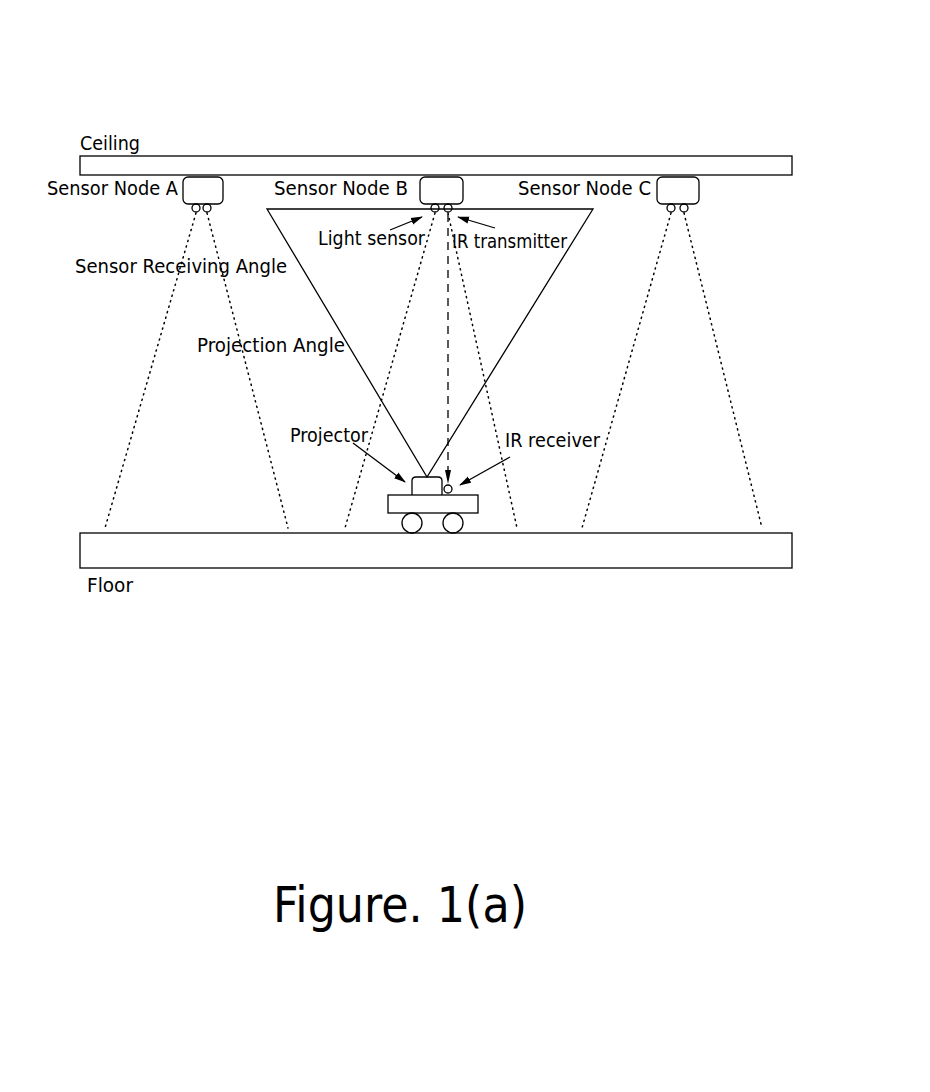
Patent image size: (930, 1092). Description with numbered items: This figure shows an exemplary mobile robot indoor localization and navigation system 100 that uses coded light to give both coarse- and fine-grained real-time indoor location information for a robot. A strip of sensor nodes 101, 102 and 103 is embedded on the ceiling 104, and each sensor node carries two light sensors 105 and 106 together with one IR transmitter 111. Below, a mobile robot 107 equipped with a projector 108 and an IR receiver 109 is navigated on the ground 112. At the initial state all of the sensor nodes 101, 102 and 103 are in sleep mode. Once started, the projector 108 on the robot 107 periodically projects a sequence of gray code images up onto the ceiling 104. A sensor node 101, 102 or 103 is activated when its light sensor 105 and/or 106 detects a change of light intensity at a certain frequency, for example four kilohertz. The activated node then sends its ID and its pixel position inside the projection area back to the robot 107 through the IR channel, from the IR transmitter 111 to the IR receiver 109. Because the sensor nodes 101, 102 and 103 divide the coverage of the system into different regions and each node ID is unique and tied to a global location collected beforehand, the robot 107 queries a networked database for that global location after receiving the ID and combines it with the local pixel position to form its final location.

The mobile robot indoor localization and navigation system 100 is at (528, 84).
The sensor node 101 is at (198, 177).
The sensor node 102 is at (435, 177).
The sensor node 103 is at (677, 177).
The ceiling 104 is at (140, 162).
The light sensor 105 is at (192, 211).
The light sensor 106 is at (668, 211).
The mobile robot 107 is at (458, 533).
The projector 108 is at (413, 484).
The IR receiver 109 is at (452, 489).
The IR transmitter 111 is at (210, 212).
The ground 112 is at (215, 560).